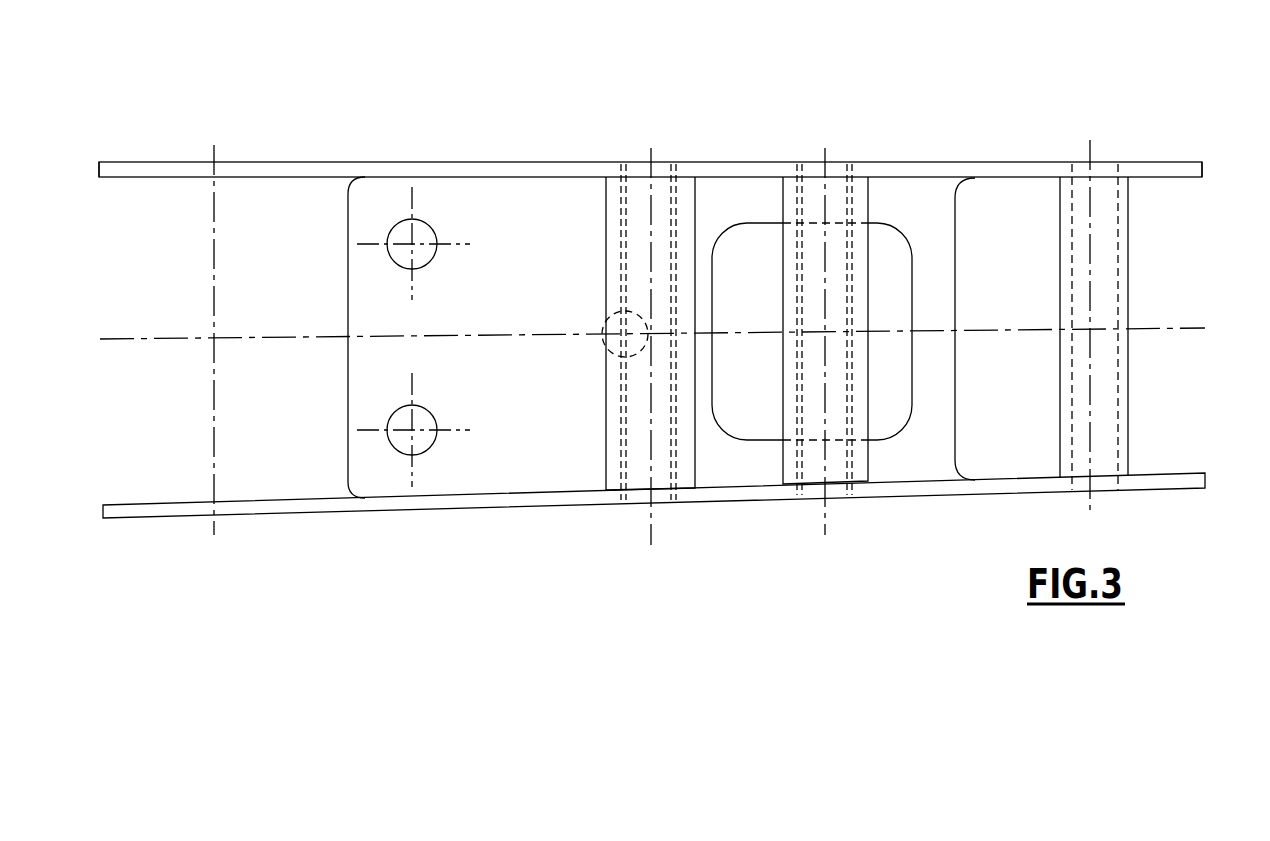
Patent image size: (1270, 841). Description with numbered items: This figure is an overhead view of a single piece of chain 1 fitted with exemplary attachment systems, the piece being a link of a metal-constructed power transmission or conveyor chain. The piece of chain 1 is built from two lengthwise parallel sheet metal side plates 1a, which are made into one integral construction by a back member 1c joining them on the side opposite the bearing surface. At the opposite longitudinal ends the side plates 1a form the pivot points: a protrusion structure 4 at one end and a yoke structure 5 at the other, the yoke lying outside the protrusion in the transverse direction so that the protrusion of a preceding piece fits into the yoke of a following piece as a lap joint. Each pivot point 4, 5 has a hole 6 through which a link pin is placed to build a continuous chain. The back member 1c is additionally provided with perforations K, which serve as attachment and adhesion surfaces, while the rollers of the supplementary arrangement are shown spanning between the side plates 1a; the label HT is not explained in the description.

The piece of chain 1 is at (652, 306).
The side plate 1a is at (548, 158).
The back member 1c is at (543, 291).
The protrusion structure 4 is at (1182, 159).
The yoke structure 5 is at (149, 159).
The hole 6 is at (208, 146).
The perforations K is at (418, 218).
The rear plate HT is at (1105, 279).